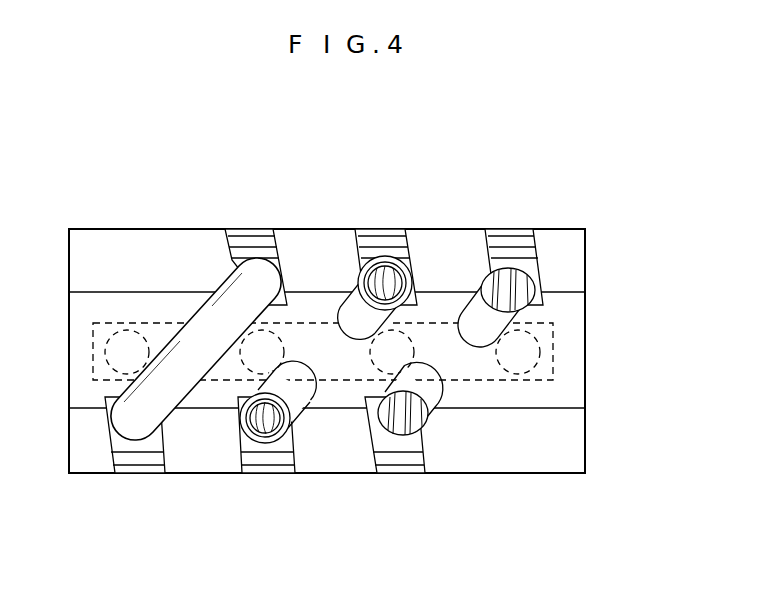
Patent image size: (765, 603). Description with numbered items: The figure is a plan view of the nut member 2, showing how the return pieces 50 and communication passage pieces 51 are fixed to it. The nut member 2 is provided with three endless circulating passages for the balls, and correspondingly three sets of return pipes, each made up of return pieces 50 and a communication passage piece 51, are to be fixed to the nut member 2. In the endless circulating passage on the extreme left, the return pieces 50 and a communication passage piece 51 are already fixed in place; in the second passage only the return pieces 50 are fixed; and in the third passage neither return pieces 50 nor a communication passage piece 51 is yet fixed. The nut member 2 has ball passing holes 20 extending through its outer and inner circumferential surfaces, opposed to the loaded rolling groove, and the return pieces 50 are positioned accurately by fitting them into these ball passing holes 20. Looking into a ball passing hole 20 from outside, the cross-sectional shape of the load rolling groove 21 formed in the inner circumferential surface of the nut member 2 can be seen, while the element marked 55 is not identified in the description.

The nut member 2 is at (109, 226).
The ball passing hole 20 is at (527, 253).
The load rolling groove 21 is at (508, 252).
The return piece 50 is at (249, 262).
The communication passage piece 51 is at (212, 300).
The ring member 55 is at (368, 252).